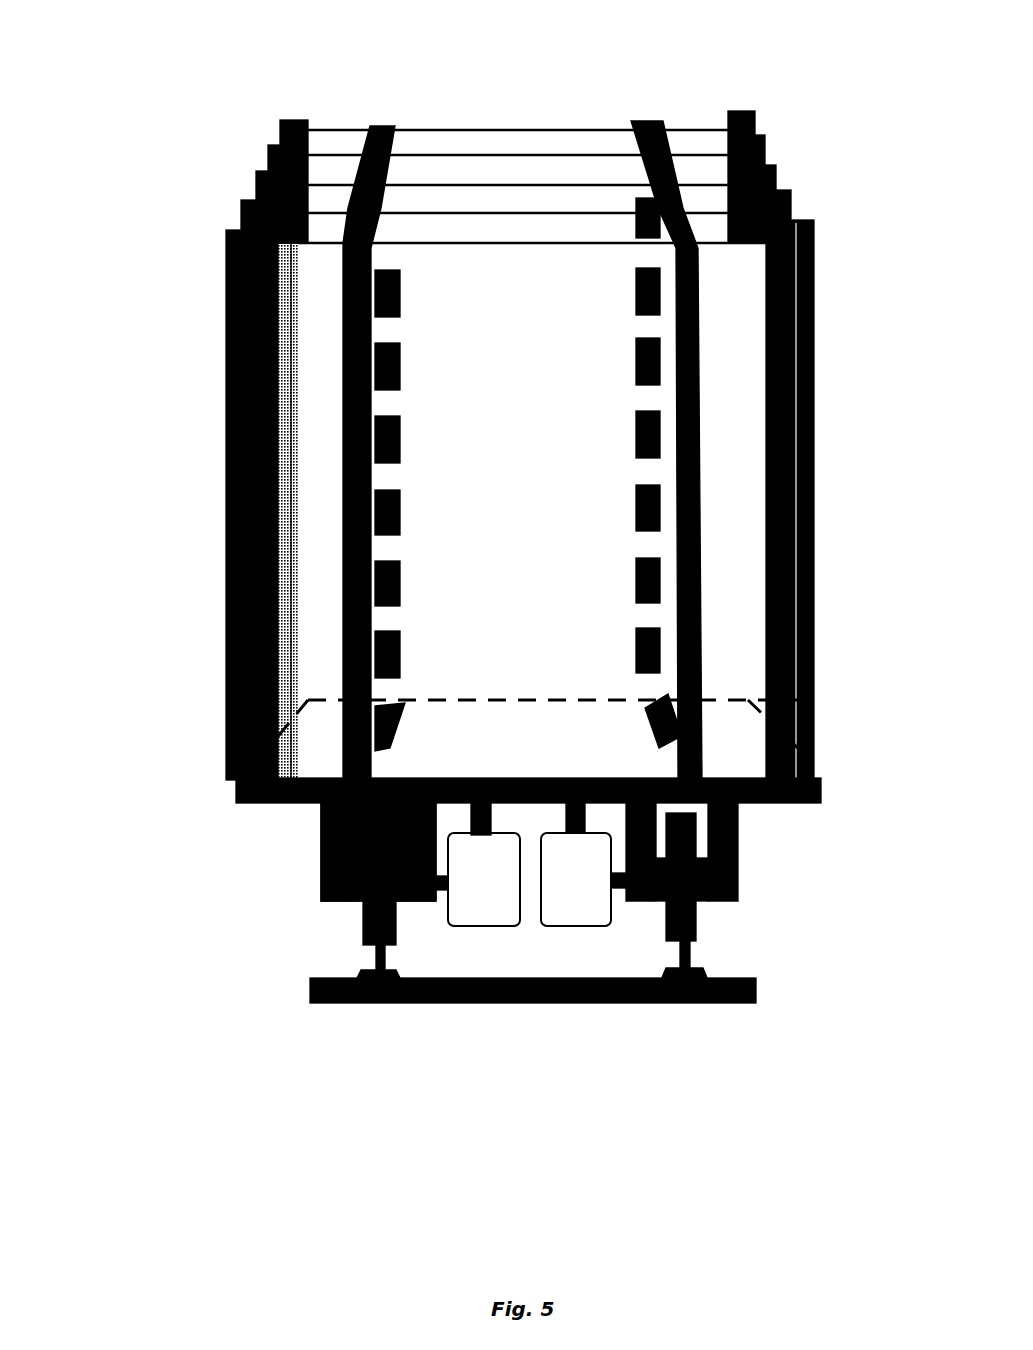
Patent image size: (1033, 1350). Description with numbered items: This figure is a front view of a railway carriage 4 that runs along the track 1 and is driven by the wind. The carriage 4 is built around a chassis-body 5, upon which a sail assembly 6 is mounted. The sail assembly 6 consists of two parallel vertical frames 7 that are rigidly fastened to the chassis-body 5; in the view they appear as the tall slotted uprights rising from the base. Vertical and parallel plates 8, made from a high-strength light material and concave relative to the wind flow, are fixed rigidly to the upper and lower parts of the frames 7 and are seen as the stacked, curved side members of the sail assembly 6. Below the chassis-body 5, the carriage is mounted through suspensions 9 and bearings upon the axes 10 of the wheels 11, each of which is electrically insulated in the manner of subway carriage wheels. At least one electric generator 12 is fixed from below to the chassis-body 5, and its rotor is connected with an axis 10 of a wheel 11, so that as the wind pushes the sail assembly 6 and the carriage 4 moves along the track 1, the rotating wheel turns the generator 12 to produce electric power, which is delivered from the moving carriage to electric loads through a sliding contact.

The track 1 is at (368, 950).
The carriage 4 is at (190, 652).
The chassis-body 5 is at (758, 773).
The sail assembly 6 is at (440, 140).
The vertical frames 7 is at (630, 337).
The plates 8 is at (737, 372).
The suspensions 9 is at (663, 877).
The axes 10 is at (433, 875).
The wheels 11 is at (675, 898).
The electric generator 12 is at (473, 872).